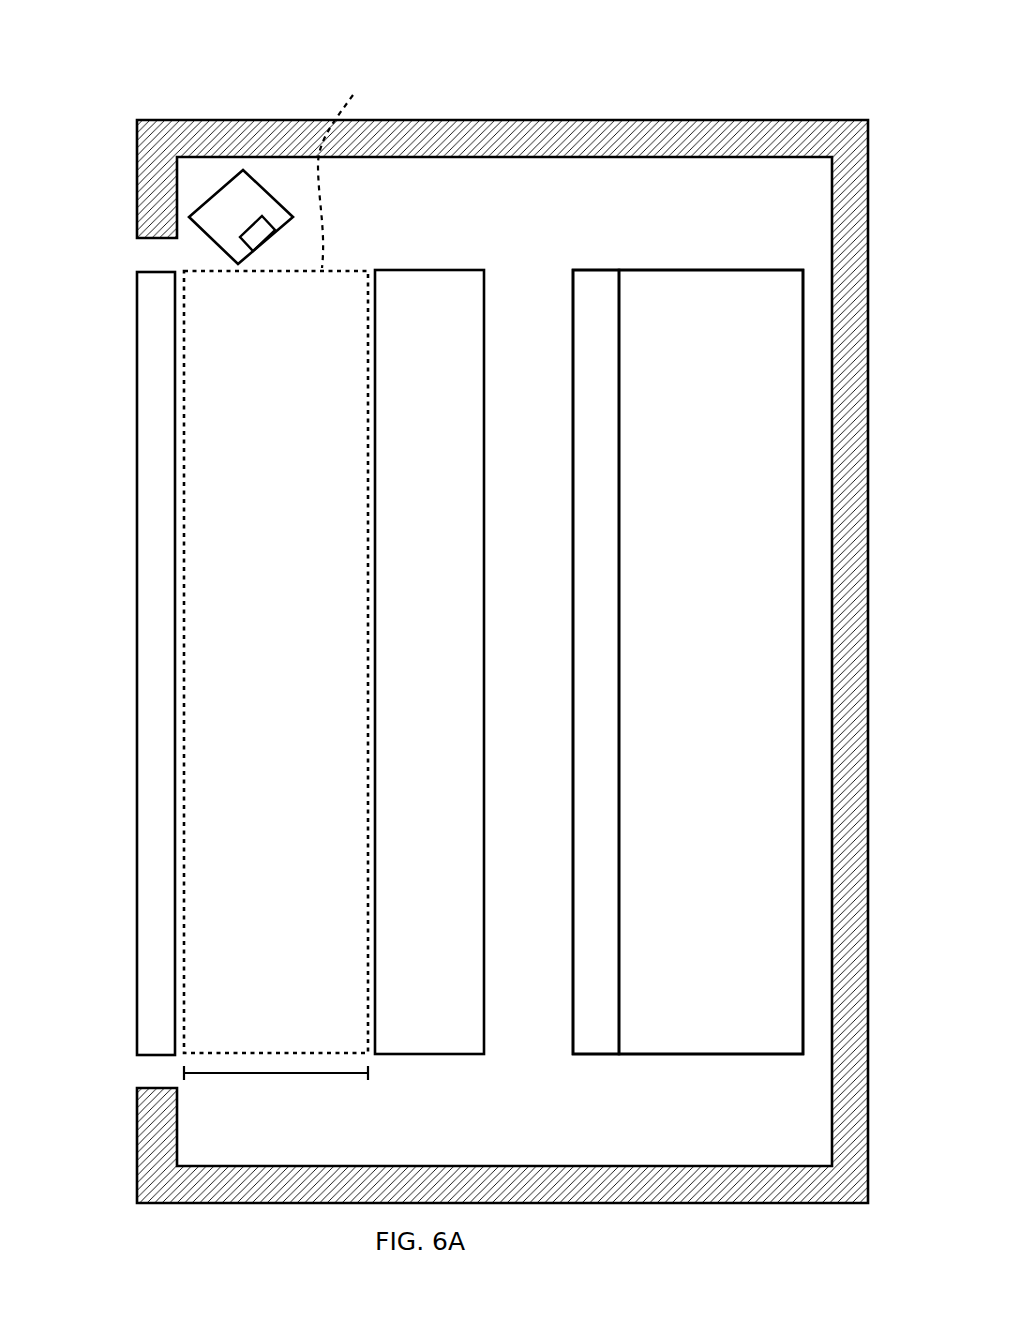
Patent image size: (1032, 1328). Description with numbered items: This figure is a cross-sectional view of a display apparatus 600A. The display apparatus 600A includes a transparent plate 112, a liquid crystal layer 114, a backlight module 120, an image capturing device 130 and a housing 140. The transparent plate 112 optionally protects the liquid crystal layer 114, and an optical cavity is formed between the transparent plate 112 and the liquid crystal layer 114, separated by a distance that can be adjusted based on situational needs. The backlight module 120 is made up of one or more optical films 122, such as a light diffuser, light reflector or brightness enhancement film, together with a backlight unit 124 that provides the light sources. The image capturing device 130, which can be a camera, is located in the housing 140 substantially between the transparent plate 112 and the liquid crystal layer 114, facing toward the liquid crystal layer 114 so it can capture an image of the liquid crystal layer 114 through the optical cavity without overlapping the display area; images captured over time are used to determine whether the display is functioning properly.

The display apparatus 600A is at (905, 22).
The transparent plate 112 is at (137, 322).
The liquid crystal layer 114 is at (460, 270).
The backlight module 120 is at (688, 611).
The optical films 122 is at (580, 270).
The backlight unit 124 is at (663, 270).
The image capturing device 130 is at (208, 198).
The housing 140 is at (868, 200).